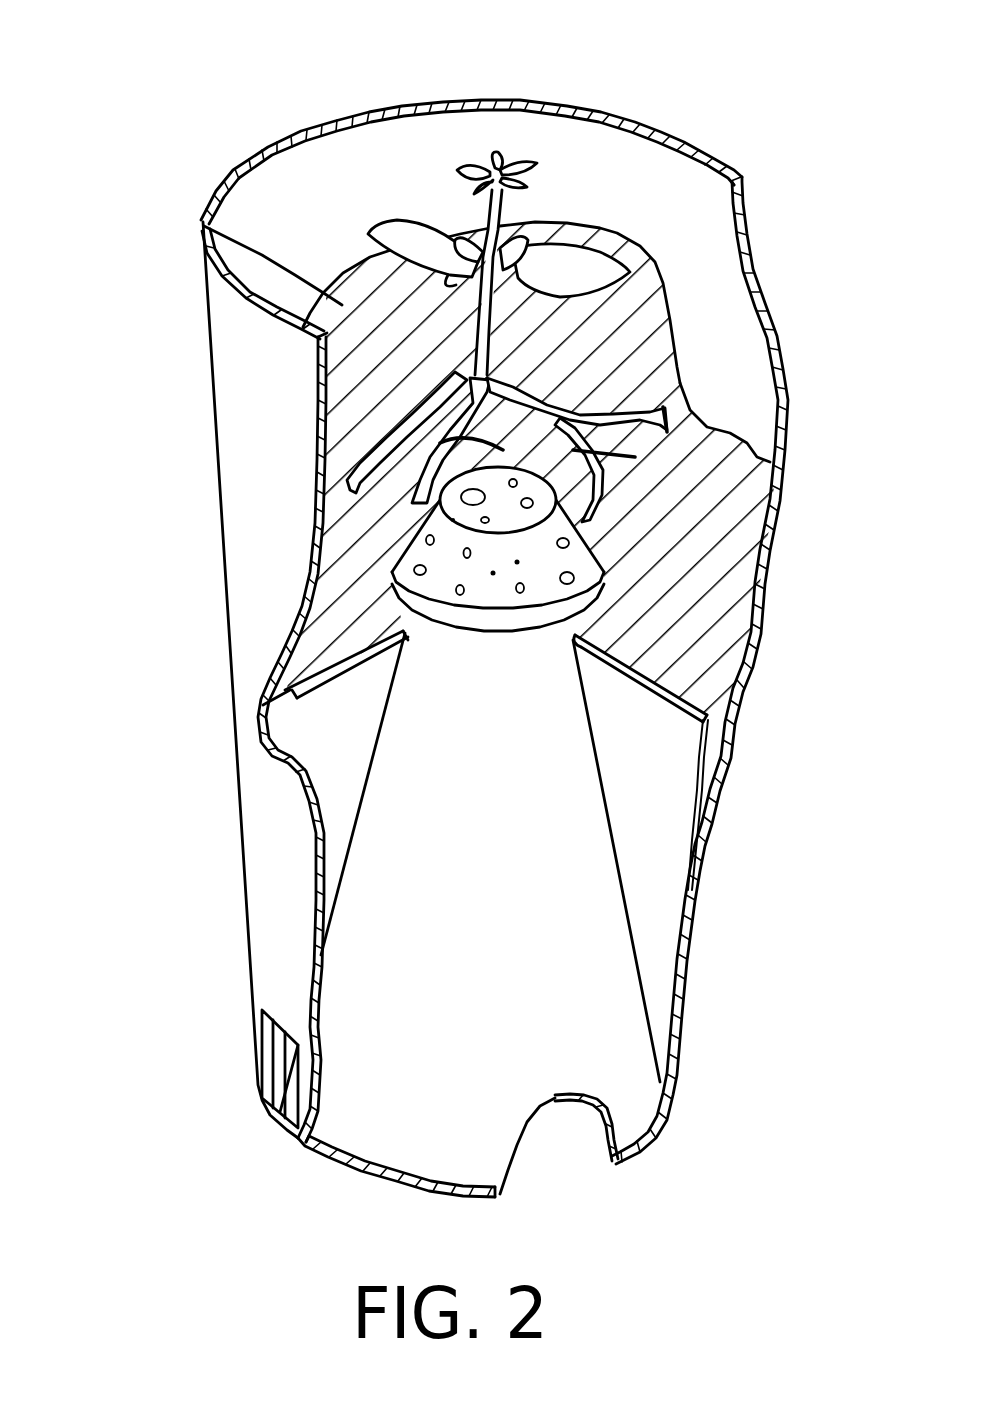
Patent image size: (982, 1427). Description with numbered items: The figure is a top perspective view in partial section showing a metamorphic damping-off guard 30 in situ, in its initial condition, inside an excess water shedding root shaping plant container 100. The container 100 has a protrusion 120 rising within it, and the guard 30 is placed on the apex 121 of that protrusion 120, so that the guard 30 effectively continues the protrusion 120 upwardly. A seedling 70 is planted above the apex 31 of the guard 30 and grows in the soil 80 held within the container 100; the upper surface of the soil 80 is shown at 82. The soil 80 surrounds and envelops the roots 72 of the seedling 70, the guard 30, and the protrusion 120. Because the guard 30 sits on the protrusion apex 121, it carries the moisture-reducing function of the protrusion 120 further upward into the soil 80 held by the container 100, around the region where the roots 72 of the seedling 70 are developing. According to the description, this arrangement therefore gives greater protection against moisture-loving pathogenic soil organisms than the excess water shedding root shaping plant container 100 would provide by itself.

The excess water shedding root shaping plant container 100 is at (250, 135).
The upper surface of soil 82 is at (203, 223).
The soil 80 is at (565, 480).
The seedling 70 is at (499, 193).
The roots 72 is at (397, 425).
The apex of guard 31 is at (351, 489).
The metamorphic damping-off guard 30 is at (366, 537).
The apex of protrusion 121 is at (623, 618).
The protrusion 120 is at (530, 856).